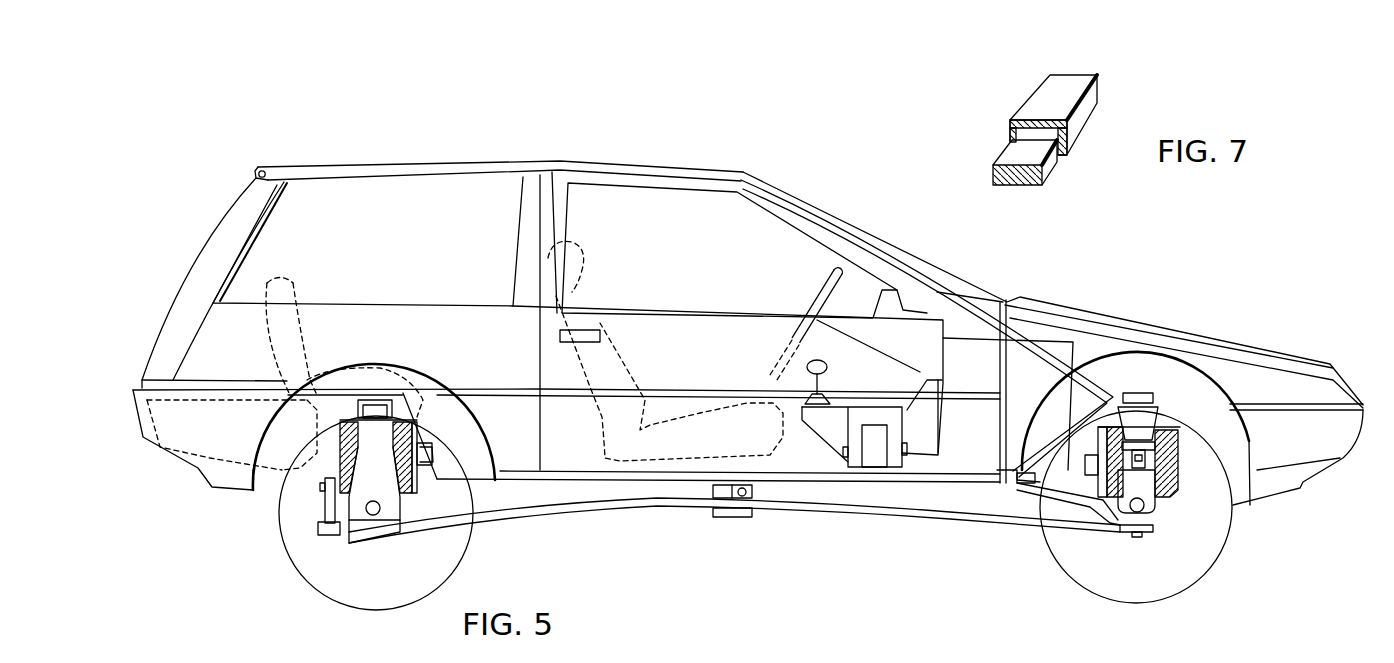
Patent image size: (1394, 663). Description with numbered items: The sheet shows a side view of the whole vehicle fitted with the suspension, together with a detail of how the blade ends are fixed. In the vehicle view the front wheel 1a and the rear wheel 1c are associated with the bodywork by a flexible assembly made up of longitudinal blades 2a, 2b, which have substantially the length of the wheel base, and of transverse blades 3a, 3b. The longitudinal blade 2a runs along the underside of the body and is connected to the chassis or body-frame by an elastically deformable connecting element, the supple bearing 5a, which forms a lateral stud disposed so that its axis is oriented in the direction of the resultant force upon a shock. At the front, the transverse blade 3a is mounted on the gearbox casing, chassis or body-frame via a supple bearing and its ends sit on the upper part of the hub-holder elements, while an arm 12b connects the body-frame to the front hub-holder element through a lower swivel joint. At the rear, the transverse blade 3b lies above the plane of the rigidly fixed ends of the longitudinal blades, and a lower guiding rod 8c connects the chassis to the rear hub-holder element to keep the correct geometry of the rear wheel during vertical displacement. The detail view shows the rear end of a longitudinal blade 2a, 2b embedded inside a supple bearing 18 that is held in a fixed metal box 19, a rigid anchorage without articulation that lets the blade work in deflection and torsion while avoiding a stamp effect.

In FIG. 5, the wheel 1a is at (1217, 562).
In FIG. 5, the wheel 1c is at (300, 577).
In FIG. 5, the longitudinal blade 2a is at (658, 508).
In FIG. 7, the longitudinal blade 2a is at (1052, 171).
In FIG. 7, the longitudinal blade 2b is at (1055, 160).
In FIG. 5, the transverse blade 3a is at (1137, 392).
In FIG. 5, the transverse blade 3b is at (280, 447).
In FIG. 5, the supple bearing 5a is at (742, 499).
In FIG. 5, the lower guiding rod 8c is at (327, 505).
In FIG. 5, the arm 12b is at (1070, 503).
In FIG. 7, the supple bearing 18 is at (1010, 127).
In FIG. 7, the fixed metal box 19 is at (1032, 103).